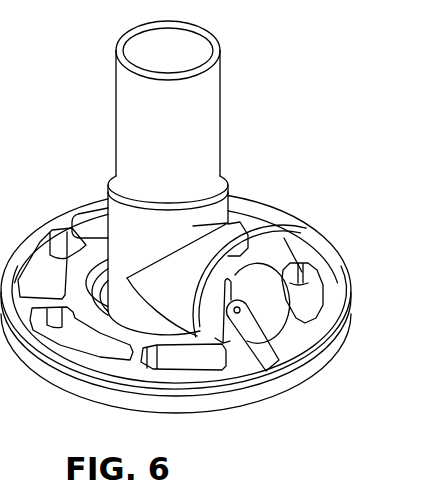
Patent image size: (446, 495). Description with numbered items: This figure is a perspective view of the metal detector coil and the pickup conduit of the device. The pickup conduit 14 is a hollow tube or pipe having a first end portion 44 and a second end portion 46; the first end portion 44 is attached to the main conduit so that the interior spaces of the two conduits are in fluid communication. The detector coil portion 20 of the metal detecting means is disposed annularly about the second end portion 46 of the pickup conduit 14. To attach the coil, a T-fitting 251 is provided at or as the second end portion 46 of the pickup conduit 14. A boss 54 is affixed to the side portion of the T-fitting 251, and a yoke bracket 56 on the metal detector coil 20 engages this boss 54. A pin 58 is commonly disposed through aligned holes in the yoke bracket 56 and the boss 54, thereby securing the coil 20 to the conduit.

The pickup conduit 14 is at (116, 112).
The first end portion 44 is at (220, 34).
The detector coil portion 20 is at (60, 222).
The T-fitting 251 is at (235, 224).
The boss 54 is at (256, 280).
The second end portion 46 is at (123, 307).
The yoke bracket 56 is at (256, 347).
The pin 58 is at (222, 348).